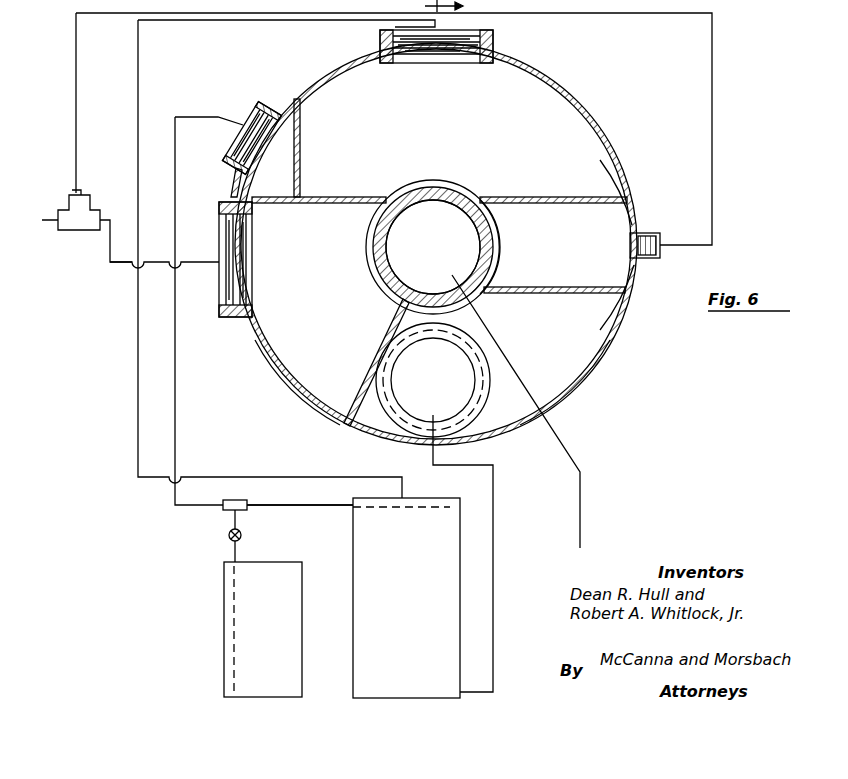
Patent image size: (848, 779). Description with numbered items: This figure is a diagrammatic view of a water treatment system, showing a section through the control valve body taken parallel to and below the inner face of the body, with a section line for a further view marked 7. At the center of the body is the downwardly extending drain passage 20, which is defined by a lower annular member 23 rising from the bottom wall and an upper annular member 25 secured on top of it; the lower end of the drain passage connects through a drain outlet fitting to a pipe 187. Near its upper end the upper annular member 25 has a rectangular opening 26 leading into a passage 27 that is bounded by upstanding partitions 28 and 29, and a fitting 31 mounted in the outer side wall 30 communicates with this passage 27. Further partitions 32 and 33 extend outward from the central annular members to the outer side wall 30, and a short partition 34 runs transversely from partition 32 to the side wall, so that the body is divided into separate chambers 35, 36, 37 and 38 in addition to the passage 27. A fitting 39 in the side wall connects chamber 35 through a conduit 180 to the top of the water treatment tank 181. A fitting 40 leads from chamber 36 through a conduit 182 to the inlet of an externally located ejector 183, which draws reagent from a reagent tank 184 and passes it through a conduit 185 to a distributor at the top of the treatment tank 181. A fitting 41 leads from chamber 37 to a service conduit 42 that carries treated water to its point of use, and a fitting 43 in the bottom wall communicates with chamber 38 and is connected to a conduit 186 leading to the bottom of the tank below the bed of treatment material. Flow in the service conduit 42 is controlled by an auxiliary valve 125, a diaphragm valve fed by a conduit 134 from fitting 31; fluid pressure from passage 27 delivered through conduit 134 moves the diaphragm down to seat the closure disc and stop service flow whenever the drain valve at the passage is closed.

The section line for FIG. 7 is at (453, 9).
The drain passage 20 is at (395, 243).
The lower annular member 23 is at (385, 275).
The upper annular member 25 is at (470, 190).
The rectangular opening 26 is at (488, 228).
The passage 27 is at (622, 212).
The upstanding partition 28 is at (553, 200).
The upstanding partition 29 is at (550, 293).
The outer side wall 30 is at (632, 284).
The fitting 31 is at (650, 233).
The partition 32 is at (340, 198).
The partition 33 is at (365, 378).
The short partition 34 is at (302, 127).
The chamber 35 is at (547, 98).
The chamber 36 is at (240, 180).
The chamber 37 is at (305, 360).
The chamber 38 is at (565, 369).
The fitting 39 is at (497, 40).
The fitting 40 is at (262, 100).
The fitting 41 is at (230, 318).
The service conduit 42 is at (156, 267).
The fitting 43 is at (488, 398).
The auxiliary valve 125 is at (98, 198).
The conduit 134 is at (78, 113).
The conduit 180 is at (140, 68).
The water treatment tank 181 is at (351, 633).
The conduit 182 is at (177, 150).
The ejector 183 is at (248, 510).
The reagent tank 184 is at (228, 612).
The conduit 185 is at (291, 507).
The conduit 186 is at (494, 545).
The pipe 187 is at (578, 455).